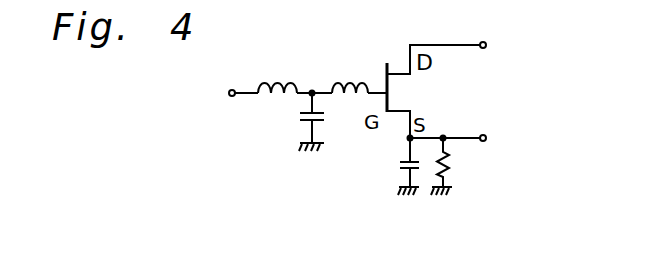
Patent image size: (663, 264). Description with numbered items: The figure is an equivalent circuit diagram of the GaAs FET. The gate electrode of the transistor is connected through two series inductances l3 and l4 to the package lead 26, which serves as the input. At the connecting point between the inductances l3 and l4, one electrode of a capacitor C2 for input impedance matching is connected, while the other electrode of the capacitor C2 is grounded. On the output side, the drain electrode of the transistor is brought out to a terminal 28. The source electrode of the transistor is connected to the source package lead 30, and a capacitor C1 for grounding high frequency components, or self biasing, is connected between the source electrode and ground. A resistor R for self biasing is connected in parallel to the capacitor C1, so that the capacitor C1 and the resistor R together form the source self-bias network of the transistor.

The package lead 26 is at (223, 93).
The drain output terminal 28 is at (487, 45).
The source package lead 30 is at (487, 138).
The inductance l3 is at (277, 74).
The inductance l4 is at (350, 74).
The capacitor for input impedance matching C2 is at (301, 118).
The capacitor for grounding high frequency components C1 is at (399, 164).
The resistor for self biasing R is at (455, 166).